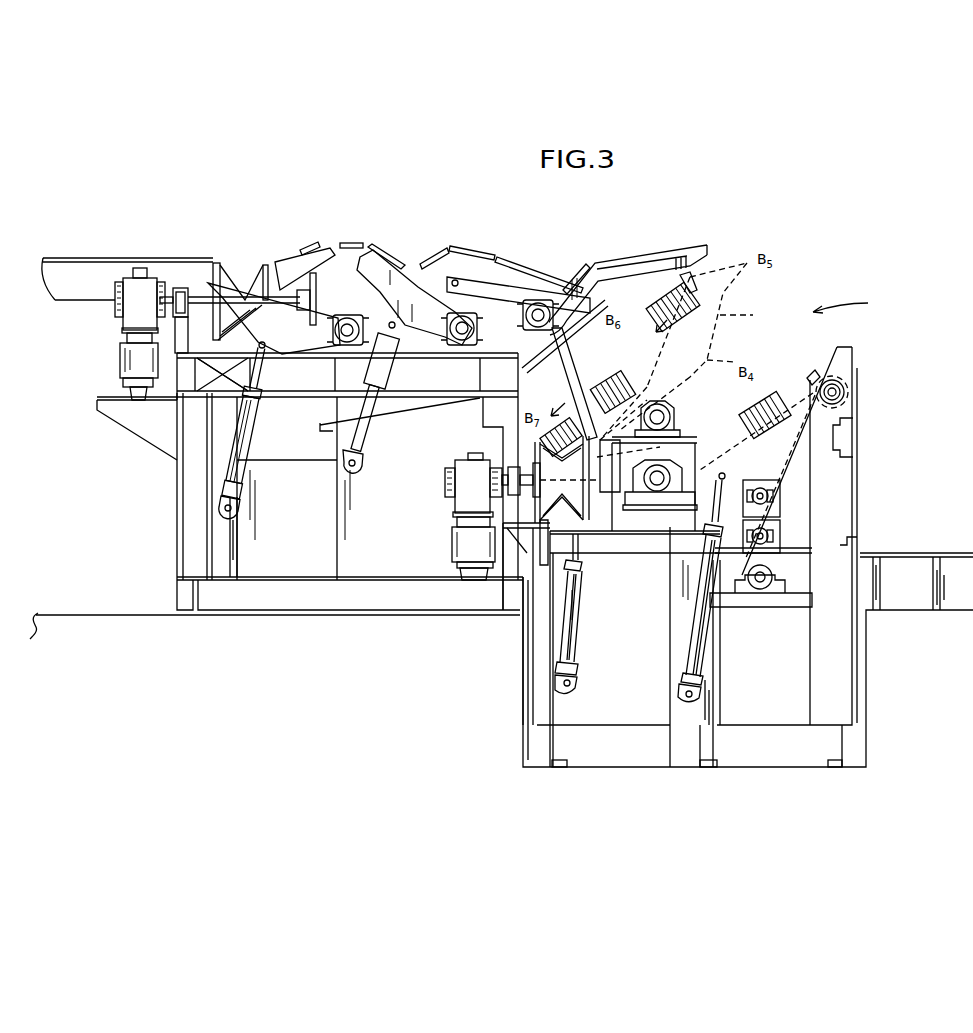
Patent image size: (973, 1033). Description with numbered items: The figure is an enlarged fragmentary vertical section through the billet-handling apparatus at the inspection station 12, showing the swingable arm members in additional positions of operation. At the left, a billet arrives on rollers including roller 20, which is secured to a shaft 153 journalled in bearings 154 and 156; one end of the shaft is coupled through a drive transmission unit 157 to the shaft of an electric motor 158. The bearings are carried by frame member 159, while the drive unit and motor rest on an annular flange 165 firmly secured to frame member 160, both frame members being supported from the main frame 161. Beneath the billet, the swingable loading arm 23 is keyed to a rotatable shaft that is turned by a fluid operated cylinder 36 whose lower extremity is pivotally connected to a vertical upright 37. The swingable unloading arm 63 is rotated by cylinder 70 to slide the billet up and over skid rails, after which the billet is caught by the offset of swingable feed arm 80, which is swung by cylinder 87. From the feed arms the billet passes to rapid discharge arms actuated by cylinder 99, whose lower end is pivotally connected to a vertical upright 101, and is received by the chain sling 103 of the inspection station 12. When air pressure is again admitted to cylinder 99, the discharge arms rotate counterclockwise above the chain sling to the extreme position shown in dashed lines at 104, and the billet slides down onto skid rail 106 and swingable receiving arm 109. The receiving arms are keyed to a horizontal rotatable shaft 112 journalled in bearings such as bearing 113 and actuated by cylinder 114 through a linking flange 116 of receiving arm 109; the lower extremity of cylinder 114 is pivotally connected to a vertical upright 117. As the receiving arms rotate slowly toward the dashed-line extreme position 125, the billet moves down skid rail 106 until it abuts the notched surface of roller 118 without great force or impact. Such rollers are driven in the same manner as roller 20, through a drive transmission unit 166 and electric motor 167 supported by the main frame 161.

The inspection station 12 is at (852, 304).
The roller 20 is at (250, 278).
The swingable loading arm 23 is at (314, 333).
The fluid operated cylinder 36 is at (237, 472).
The vertical upright 37 is at (227, 543).
The swingable unloading arm 63 is at (405, 270).
The cylinder 70 is at (367, 436).
The swingable feed arm 80 is at (634, 276).
The cylinder 87 is at (410, 355).
The cylinder 99 is at (700, 642).
The vertical upright 101 is at (710, 707).
The chain sling 103 is at (820, 400).
The extreme rotatable position of discharge arms 104 is at (910, 553).
The skid rail 106 is at (648, 400).
The swingable receiving arm 109 is at (583, 372).
The horizontal rotatable shaft 112 is at (655, 485).
The bearing 113 is at (673, 493).
The cylinder 114 is at (578, 636).
The linking flange 116 is at (587, 440).
The vertical upright 117 is at (563, 702).
The roller 118 is at (568, 531).
The extreme rotatable position of receiving arms 125 is at (550, 477).
The shaft 153 is at (203, 290).
The bearing 154 is at (303, 292).
The bearing 156 is at (185, 287).
The drive transmission unit 157 is at (130, 312).
The electric motor 158 is at (130, 366).
The frame member 159 is at (205, 388).
The frame member 160 is at (190, 505).
The main frame 161 is at (290, 598).
The annular flange 165 is at (147, 438).
The drive transmission unit 166 is at (465, 497).
The electric motor 167 is at (470, 543).